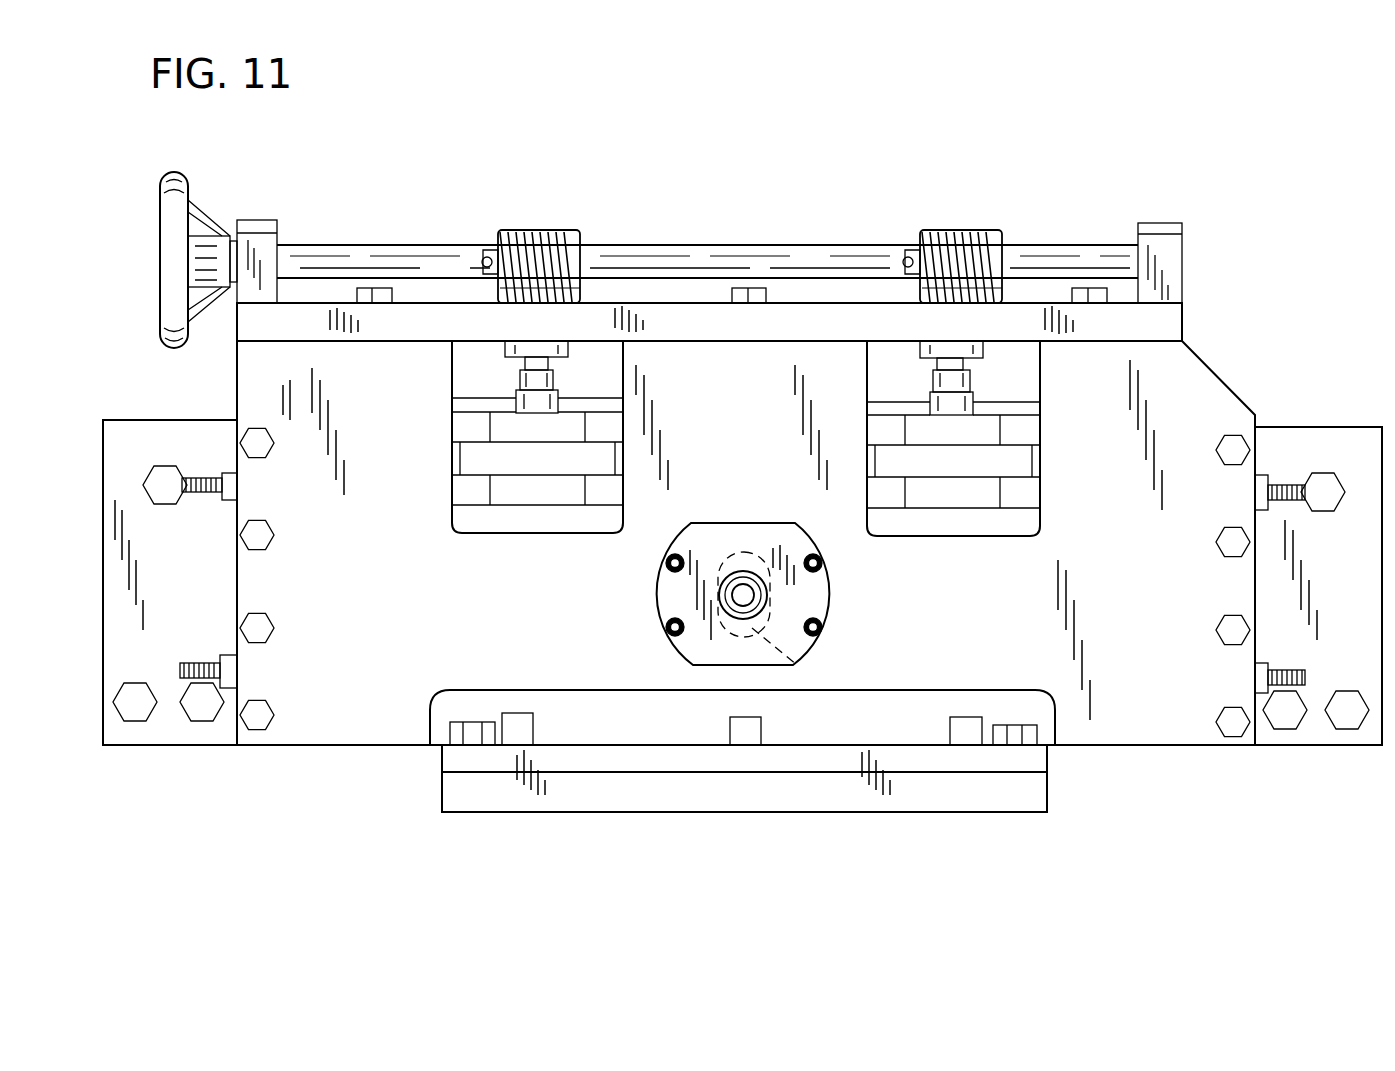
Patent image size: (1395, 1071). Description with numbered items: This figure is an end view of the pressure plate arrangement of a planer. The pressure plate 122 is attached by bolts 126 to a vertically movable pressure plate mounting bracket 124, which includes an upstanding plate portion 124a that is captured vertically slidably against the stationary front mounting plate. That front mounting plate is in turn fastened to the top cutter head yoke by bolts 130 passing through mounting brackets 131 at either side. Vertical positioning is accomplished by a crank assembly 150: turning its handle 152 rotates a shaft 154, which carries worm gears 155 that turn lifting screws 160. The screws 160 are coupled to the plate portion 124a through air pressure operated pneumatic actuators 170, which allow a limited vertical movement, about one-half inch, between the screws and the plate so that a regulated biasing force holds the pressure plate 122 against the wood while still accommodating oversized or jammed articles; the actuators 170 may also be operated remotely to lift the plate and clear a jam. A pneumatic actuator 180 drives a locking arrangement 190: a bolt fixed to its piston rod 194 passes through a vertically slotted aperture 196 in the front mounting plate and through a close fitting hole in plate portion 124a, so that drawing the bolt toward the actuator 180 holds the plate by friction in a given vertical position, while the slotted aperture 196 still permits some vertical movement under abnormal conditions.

The crank assembly 150 is at (166, 166).
The handle 152 is at (168, 264).
The shaft 154 is at (325, 248).
The worm gears 155 is at (527, 237).
The lifting screws 160 is at (562, 300).
The pneumatic actuators 170 is at (482, 538).
The mounting brackets 131 is at (141, 443).
The bolts 130 is at (262, 448).
The upstanding plate portion 124a is at (762, 426).
The pneumatic actuator 180 is at (759, 540).
The locking arrangement 190 is at (640, 597).
The piston rod 194 is at (748, 597).
The vertically slotted aperture 196 is at (797, 665).
The pressure plate mounting bracket 124 is at (1018, 762).
The pressure plate 122 is at (958, 795).
The bolts 126 is at (470, 722).